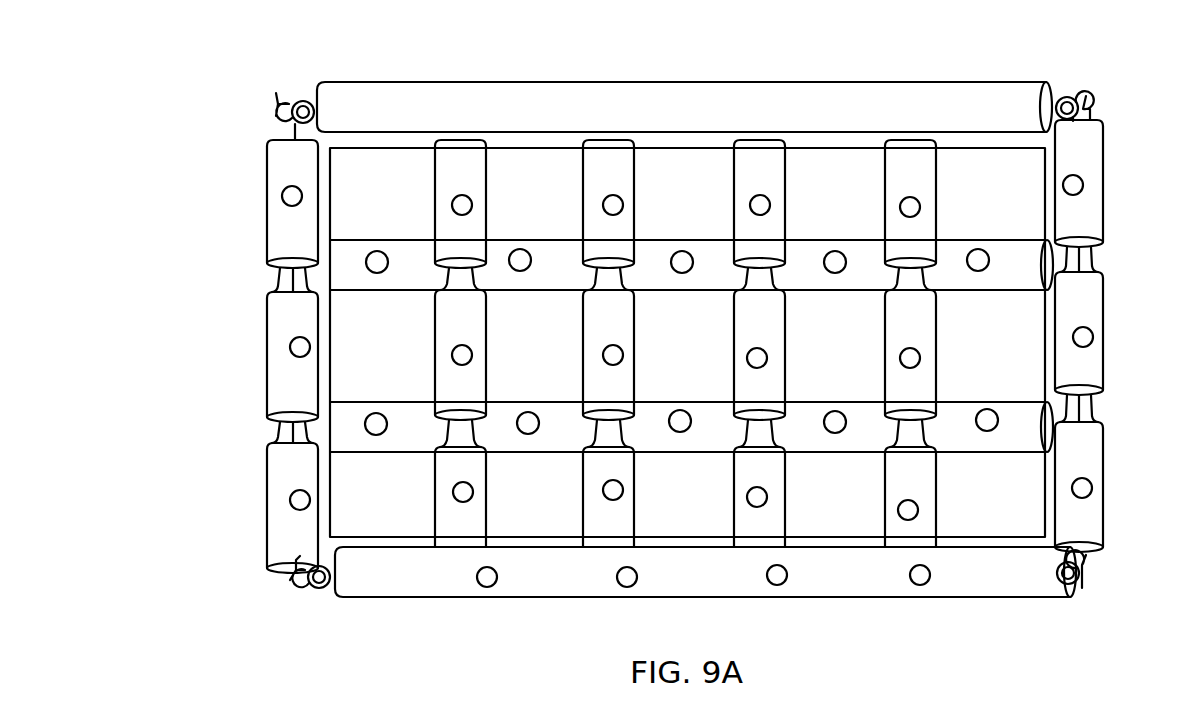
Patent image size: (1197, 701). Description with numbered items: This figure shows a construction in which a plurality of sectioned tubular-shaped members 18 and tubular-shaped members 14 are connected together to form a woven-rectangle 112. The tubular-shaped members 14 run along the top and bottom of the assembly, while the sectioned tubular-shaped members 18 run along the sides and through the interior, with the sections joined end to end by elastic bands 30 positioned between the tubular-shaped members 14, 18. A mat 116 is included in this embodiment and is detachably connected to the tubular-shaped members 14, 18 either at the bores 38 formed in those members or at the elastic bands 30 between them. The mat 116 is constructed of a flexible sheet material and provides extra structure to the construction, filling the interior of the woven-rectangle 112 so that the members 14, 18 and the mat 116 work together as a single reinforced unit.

The tubular-shaped member 14 is at (776, 82).
The sectioned tubular-shaped member 18 is at (247, 357).
The elastic band 30 is at (1080, 263).
The bore 38 is at (628, 588).
The woven-rectangle 112 is at (1100, 61).
The mat 116 is at (362, 498).